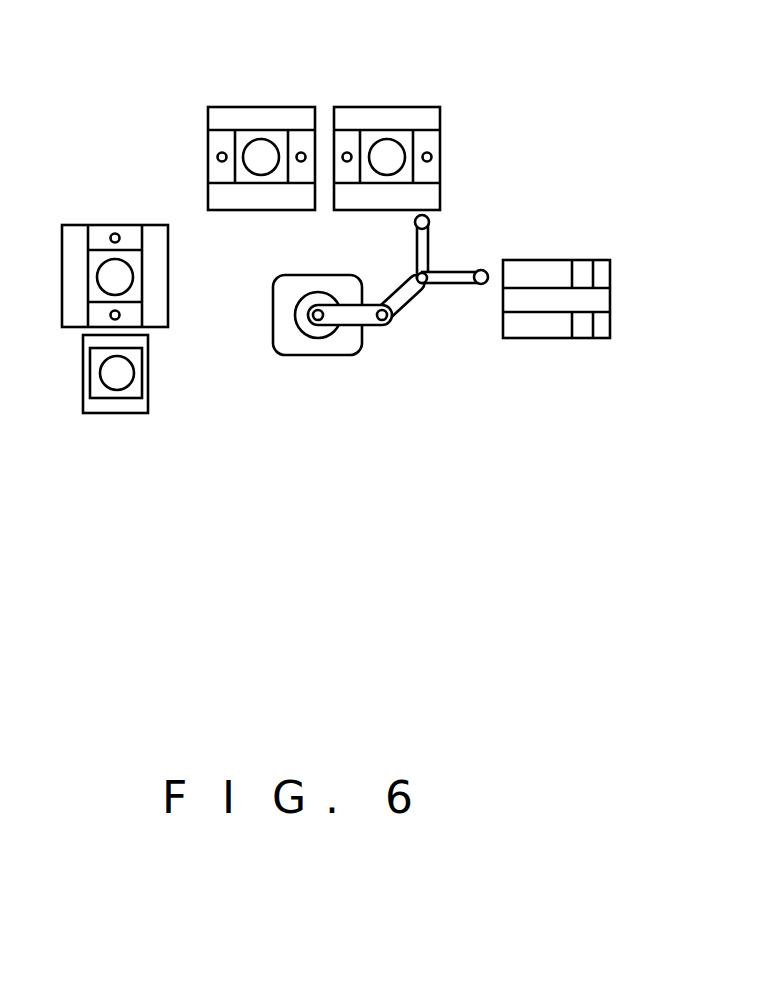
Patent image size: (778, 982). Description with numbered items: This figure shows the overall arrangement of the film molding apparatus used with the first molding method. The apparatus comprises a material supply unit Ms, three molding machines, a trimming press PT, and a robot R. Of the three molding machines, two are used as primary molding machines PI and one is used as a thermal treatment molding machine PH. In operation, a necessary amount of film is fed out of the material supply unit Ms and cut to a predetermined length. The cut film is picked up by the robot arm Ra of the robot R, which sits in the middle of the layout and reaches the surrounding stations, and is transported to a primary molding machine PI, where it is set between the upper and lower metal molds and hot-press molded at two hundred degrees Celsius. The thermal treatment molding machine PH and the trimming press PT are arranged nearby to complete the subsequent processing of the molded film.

The primary molding machine PI is at (258, 117).
The thermal treatment molding machine PH is at (80, 235).
The trimming press PT is at (83, 378).
The robot R is at (317, 355).
The robot arm Ra is at (458, 273).
The material supply unit Ms is at (610, 312).